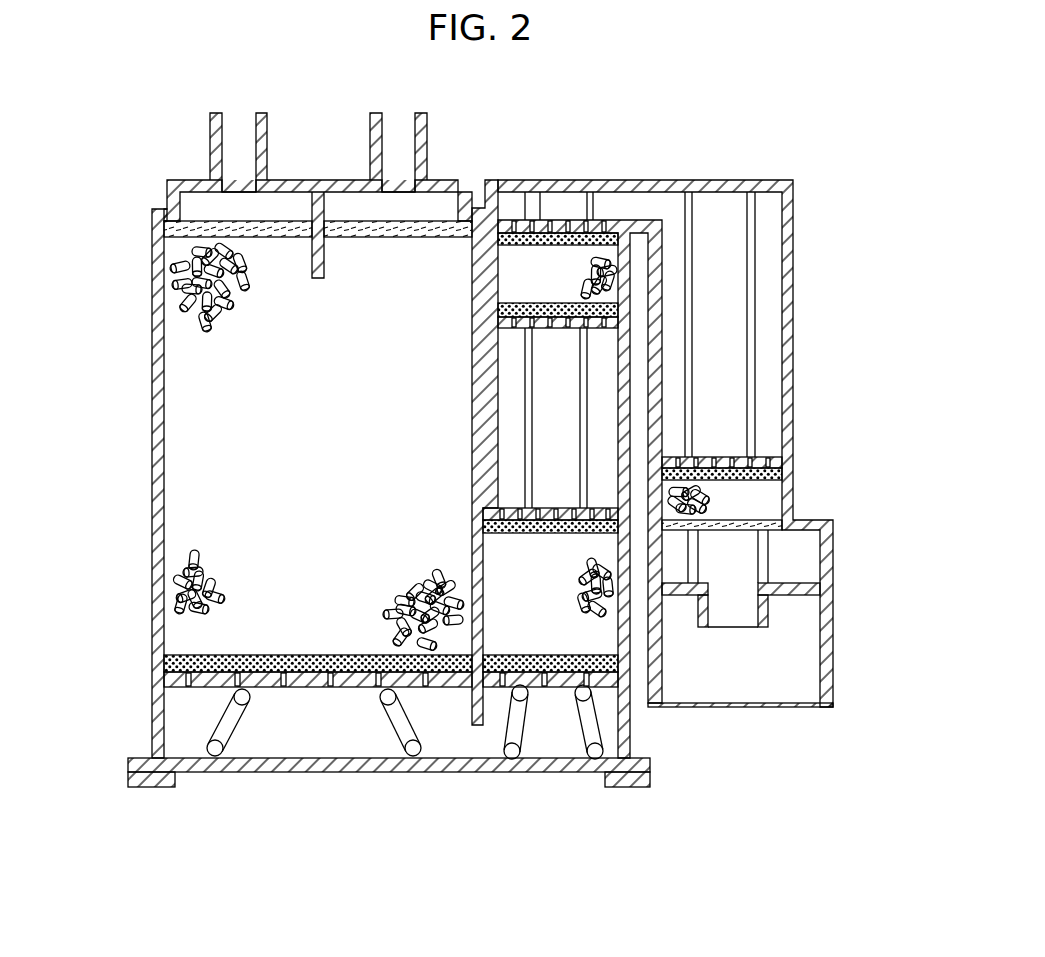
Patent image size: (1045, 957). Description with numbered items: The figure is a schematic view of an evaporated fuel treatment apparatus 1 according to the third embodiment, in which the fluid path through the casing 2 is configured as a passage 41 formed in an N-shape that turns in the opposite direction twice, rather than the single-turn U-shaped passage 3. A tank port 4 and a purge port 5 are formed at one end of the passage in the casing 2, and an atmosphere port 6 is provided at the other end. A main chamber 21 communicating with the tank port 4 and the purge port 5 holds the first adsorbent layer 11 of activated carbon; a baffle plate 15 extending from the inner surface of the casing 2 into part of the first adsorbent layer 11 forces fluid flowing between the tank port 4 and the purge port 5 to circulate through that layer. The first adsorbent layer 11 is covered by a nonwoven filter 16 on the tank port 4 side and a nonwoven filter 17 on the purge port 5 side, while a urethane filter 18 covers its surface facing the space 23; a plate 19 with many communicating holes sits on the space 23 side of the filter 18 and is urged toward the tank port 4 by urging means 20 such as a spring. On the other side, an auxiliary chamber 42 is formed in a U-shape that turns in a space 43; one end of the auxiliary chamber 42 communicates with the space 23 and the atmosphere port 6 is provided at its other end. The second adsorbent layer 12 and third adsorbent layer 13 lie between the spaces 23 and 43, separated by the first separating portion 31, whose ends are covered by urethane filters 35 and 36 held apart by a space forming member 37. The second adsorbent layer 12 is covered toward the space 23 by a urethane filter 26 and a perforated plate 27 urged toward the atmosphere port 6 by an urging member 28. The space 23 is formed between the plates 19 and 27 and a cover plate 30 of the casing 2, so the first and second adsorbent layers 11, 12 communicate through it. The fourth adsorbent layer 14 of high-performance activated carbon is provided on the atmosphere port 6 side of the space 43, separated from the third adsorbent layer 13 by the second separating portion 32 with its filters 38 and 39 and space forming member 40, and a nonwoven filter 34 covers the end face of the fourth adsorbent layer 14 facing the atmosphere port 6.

The evaporated fuel treatment apparatus 1 is at (143, 207).
The casing 2 is at (155, 520).
The passage 3 is at (190, 460).
The tank port 4 is at (232, 150).
The purge port 5 is at (382, 140).
The atmosphere port 6 is at (742, 605).
The first adsorbent layer 11 is at (190, 378).
The second adsorbent layer 12 is at (495, 543).
The third adsorbent layer 13 is at (603, 253).
The fourth adsorbent layer 14 is at (770, 495).
The baffle plate 15 is at (322, 268).
The filter 16 is at (245, 232).
The filter 17 is at (405, 233).
The filter 18 is at (263, 657).
The plate 19 is at (316, 672).
The urging means 20 is at (235, 755).
The main chamber 21 is at (183, 639).
The space 23 is at (338, 742).
The filter 26 is at (540, 660).
The plate 27 is at (605, 636).
The urging member 28 is at (590, 742).
The cover plate 30 is at (468, 765).
The first separating portion 31 is at (510, 405).
The second separating portion 32 is at (710, 215).
The filter 34 is at (772, 530).
The filter 35 is at (538, 535).
The filter 36 is at (500, 312).
The space forming member 37 is at (525, 365).
The filter 38 is at (548, 232).
The filter 39 is at (785, 467).
The space forming member 40 is at (592, 210).
The passage 41 is at (735, 378).
The auxiliary chamber 42 is at (770, 262).
The space 43 is at (517, 213).